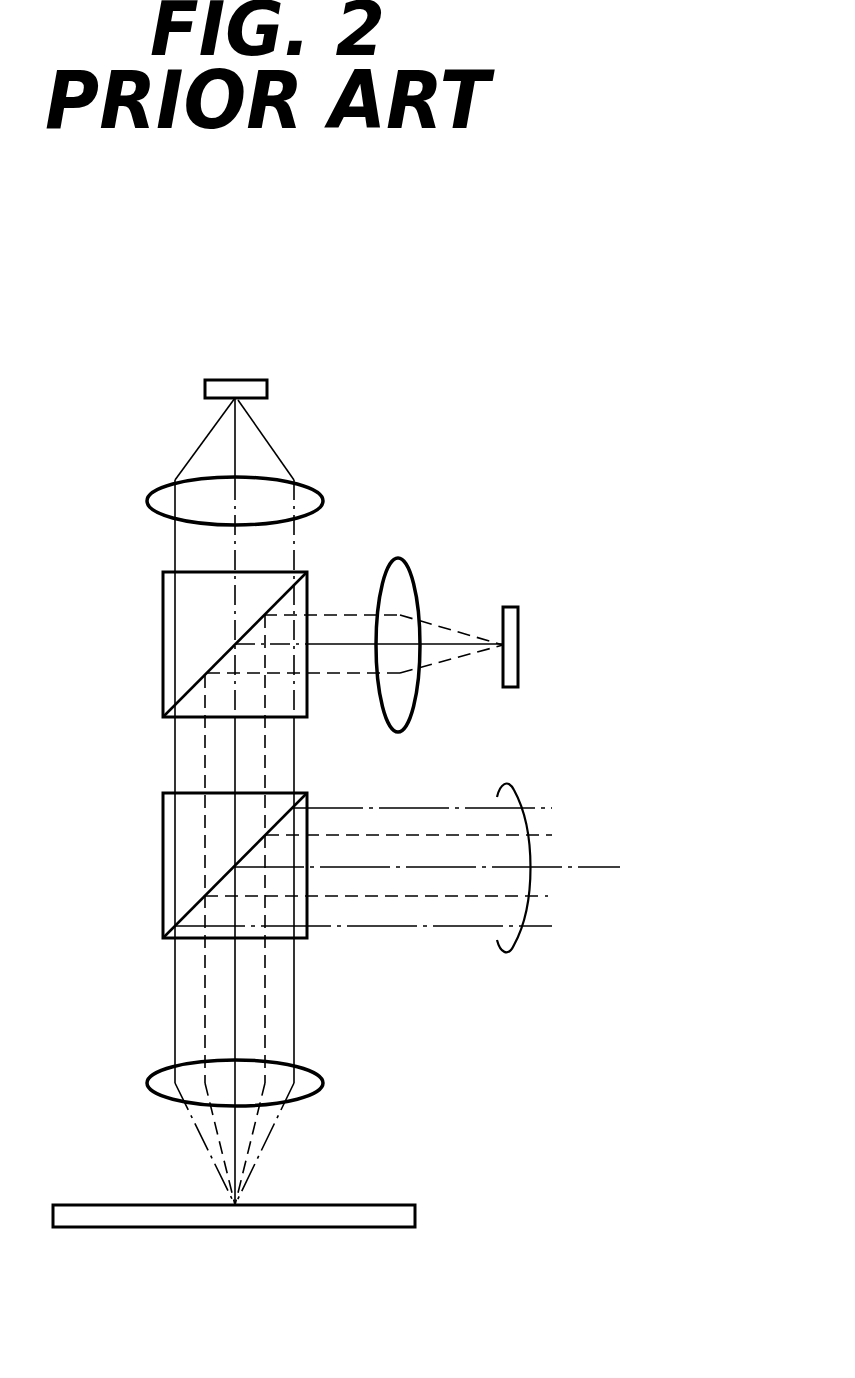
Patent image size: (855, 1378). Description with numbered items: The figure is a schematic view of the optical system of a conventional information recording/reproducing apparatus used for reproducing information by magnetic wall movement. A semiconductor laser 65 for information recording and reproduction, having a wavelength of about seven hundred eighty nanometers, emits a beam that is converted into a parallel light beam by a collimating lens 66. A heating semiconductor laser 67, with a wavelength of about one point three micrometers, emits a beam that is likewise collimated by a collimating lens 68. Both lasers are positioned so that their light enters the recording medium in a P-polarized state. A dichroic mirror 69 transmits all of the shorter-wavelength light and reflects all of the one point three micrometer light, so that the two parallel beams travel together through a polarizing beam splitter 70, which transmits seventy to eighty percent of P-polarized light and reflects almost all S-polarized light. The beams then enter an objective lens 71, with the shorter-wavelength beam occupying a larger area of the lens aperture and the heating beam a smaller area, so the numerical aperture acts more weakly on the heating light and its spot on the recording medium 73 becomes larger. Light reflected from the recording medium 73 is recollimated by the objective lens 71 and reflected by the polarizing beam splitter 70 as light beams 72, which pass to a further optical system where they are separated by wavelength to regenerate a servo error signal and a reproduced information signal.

The semiconductor laser 65 is at (268, 389).
The collimating lens 66 is at (323, 494).
The heating semiconductor laser 67 is at (513, 607).
The collimating lens 68 is at (417, 592).
The dichroic mirror 69 is at (163, 620).
The polarizing beam splitter 70 is at (163, 812).
The objective lens 71 is at (323, 1076).
The light beams 72 is at (518, 946).
The recording medium 73 is at (416, 1214).